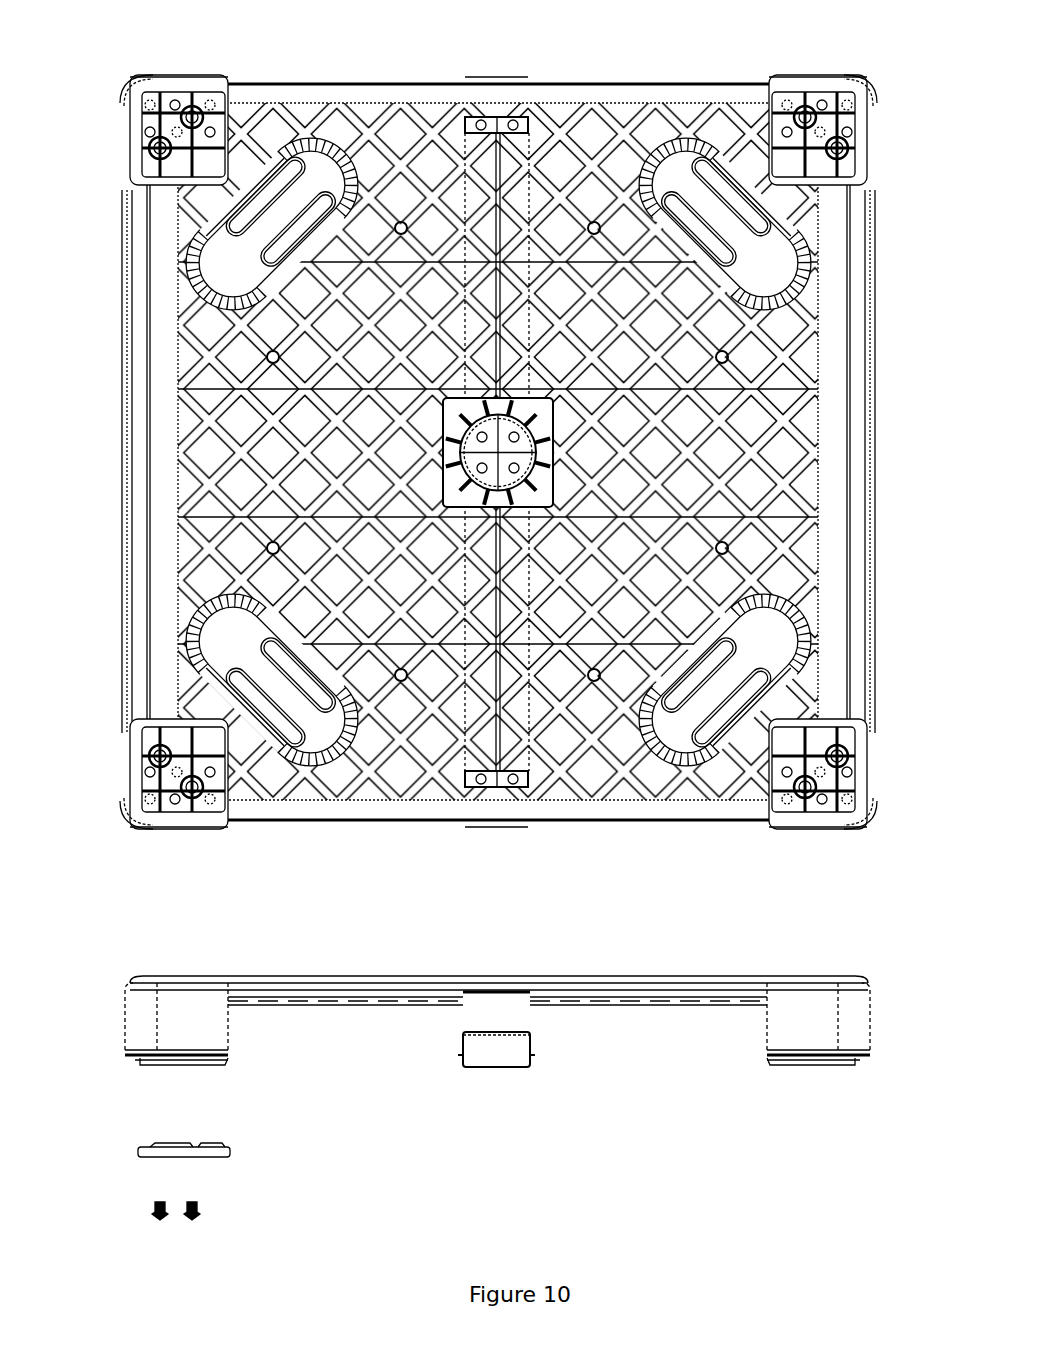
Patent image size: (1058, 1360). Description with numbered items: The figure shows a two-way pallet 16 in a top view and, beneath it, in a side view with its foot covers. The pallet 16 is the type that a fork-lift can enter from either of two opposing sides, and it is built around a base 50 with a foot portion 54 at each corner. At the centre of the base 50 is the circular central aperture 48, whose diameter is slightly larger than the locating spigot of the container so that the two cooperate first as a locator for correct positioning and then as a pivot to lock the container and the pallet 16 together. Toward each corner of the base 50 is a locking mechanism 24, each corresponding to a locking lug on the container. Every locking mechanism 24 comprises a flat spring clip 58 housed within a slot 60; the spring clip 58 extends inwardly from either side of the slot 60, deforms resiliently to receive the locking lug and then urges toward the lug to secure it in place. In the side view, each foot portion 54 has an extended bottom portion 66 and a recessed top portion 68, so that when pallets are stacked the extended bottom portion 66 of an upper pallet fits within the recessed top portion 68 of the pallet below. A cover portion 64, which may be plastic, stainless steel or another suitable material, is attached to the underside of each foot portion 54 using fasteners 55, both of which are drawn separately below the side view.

The two-way pallet 16 is at (800, 968).
The locking mechanism 24 is at (325, 185).
The central aperture 48 is at (520, 440).
The base 50 is at (395, 972).
The foot portion 54 is at (125, 1015).
The fasteners 55 is at (205, 1205).
The spring clip 58 is at (790, 248).
The slot 60 is at (680, 172).
The cover portion 64 is at (140, 1150).
The extended bottom portion 66 is at (205, 1066).
The recessed top portion 68 is at (120, 1058).